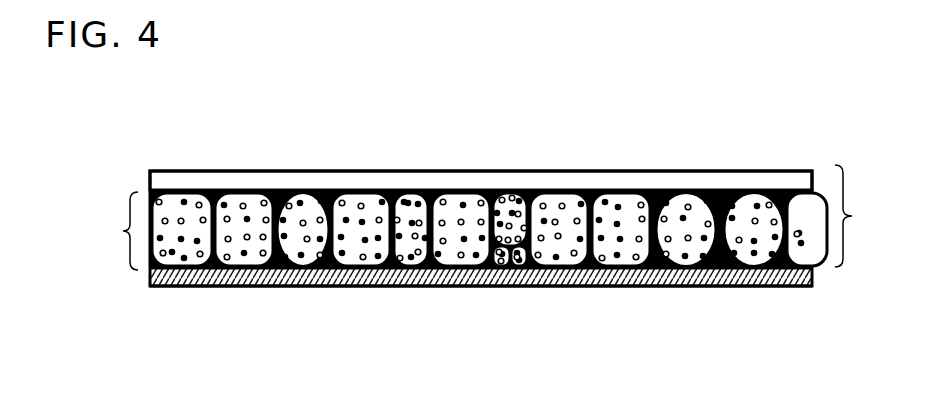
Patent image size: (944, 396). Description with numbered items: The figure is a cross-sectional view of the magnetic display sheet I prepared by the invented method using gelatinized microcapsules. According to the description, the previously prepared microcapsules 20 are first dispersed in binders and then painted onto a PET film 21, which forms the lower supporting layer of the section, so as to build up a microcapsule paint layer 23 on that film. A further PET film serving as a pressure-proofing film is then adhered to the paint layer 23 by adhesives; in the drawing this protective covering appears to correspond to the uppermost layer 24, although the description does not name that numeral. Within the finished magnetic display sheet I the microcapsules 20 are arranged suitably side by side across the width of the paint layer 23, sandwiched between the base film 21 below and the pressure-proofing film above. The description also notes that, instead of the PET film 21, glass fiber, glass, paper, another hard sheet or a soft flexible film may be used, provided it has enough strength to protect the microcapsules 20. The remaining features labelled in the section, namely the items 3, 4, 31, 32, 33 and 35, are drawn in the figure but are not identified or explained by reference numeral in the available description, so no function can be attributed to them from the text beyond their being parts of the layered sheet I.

The magnetic display sheet I is at (776, 157).
The base layer 3 is at (165, 287).
The filler particle 4 is at (172, 252).
The microcapsules 20 is at (106, 231).
The PET film 21 is at (628, 280).
The microcapsule paint layer 23 is at (867, 216).
The cover layer 24 is at (393, 171).
The capsule particles 31 is at (237, 205).
The binder layer 32 is at (296, 270).
The matrix 33 is at (393, 258).
The small particles 35 is at (490, 264).